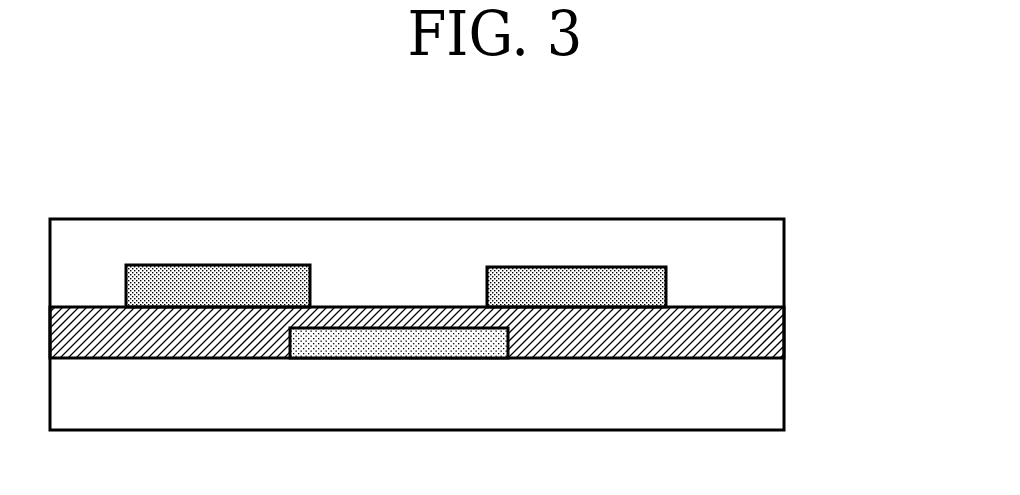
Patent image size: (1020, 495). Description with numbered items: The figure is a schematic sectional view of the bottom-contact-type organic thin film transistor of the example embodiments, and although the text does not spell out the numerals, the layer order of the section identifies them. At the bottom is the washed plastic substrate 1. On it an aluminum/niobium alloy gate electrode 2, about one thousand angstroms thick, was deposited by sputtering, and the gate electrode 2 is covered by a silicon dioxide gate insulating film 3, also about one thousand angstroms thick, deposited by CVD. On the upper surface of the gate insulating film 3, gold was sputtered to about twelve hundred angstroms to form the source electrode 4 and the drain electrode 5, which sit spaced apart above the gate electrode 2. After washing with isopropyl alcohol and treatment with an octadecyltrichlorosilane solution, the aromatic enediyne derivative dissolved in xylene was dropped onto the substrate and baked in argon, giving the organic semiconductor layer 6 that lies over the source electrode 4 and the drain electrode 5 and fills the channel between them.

The substrate 1 is at (655, 411).
The gate electrode 2 is at (470, 340).
The gate insulating film 3 is at (733, 327).
The source electrode 4 is at (143, 264).
The drain electrode 5 is at (625, 267).
The organic semiconductor layer 6 is at (413, 262).